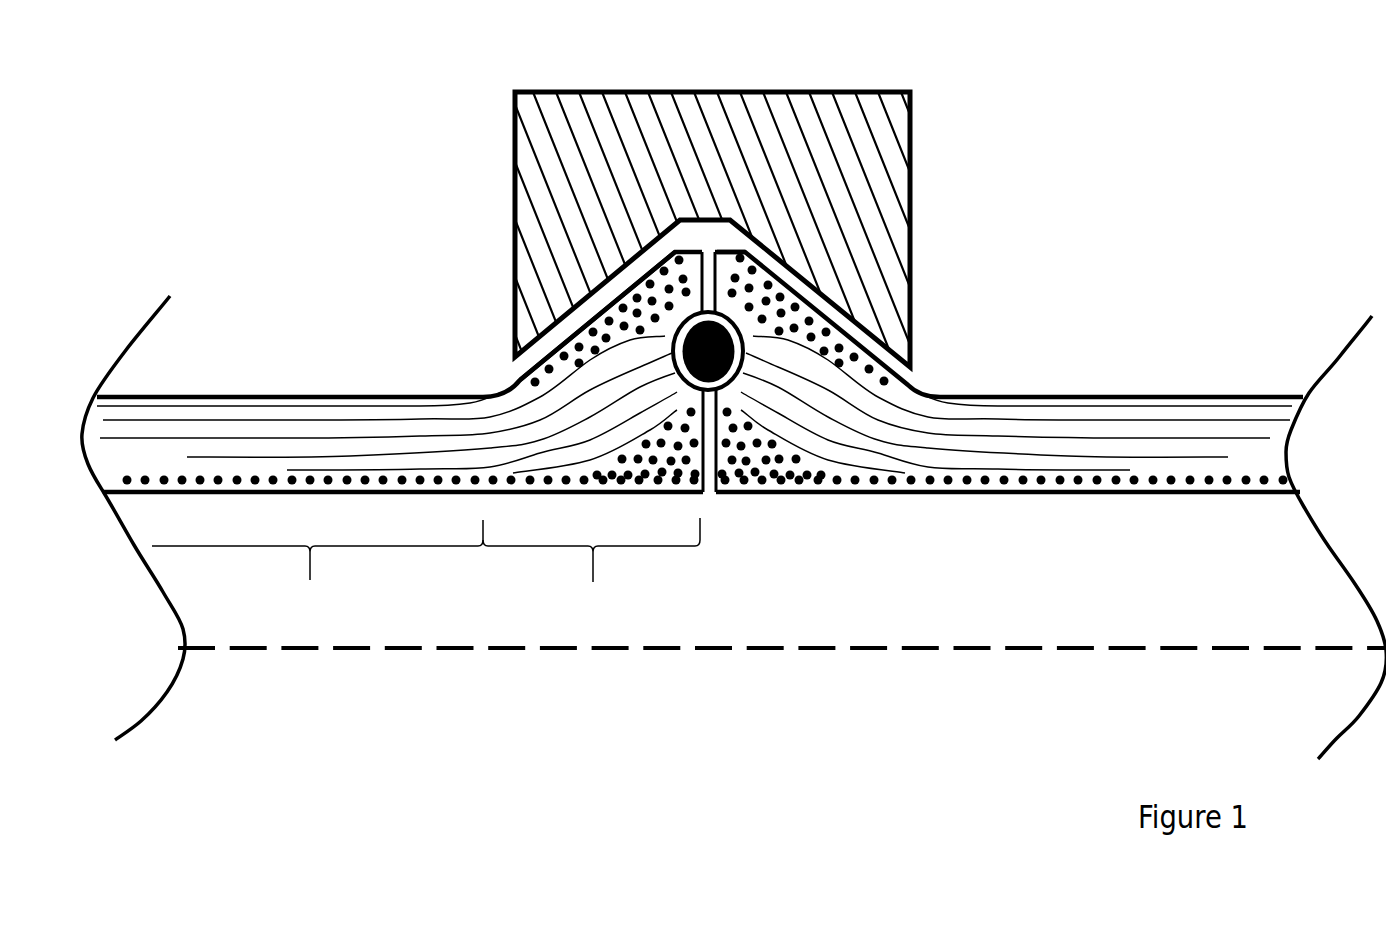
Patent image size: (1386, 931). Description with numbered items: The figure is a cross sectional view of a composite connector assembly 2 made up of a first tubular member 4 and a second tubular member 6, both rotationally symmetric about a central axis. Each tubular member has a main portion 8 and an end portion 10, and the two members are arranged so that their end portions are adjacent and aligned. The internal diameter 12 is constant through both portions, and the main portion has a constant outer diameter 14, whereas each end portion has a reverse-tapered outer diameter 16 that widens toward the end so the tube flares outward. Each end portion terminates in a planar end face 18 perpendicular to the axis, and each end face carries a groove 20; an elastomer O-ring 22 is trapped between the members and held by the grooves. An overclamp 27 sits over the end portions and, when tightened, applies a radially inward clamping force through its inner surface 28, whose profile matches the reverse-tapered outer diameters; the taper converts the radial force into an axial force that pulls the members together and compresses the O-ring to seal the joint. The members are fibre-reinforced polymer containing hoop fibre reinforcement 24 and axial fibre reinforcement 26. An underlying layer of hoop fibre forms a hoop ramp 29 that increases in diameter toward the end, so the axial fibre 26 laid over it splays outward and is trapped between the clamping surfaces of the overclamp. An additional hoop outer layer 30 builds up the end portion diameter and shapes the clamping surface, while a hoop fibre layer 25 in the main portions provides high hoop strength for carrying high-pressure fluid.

The connector assembly 2 is at (325, 175).
The first tubular member 4 is at (202, 380).
The second tubular member 6 is at (1080, 368).
The main portion 8 is at (317, 565).
The end portion 10 is at (591, 567).
The internal diameter 12 is at (650, 492).
The outer diameter 14 is at (275, 395).
The reverse-tapered outer diameter 16 is at (647, 280).
The planar end face 18 is at (723, 473).
The groove 20 is at (683, 333).
The elastomer O-ring 22 is at (717, 318).
The hoop fibre reinforcement 24 is at (787, 467).
The hoop fibre layer 25 is at (1082, 481).
The axial fibre reinforcement 26 is at (937, 430).
The overclamp 27 is at (897, 175).
The inner surface 28 is at (732, 252).
The hoop ramp 29 is at (757, 470).
The outer layer 30 is at (575, 347).